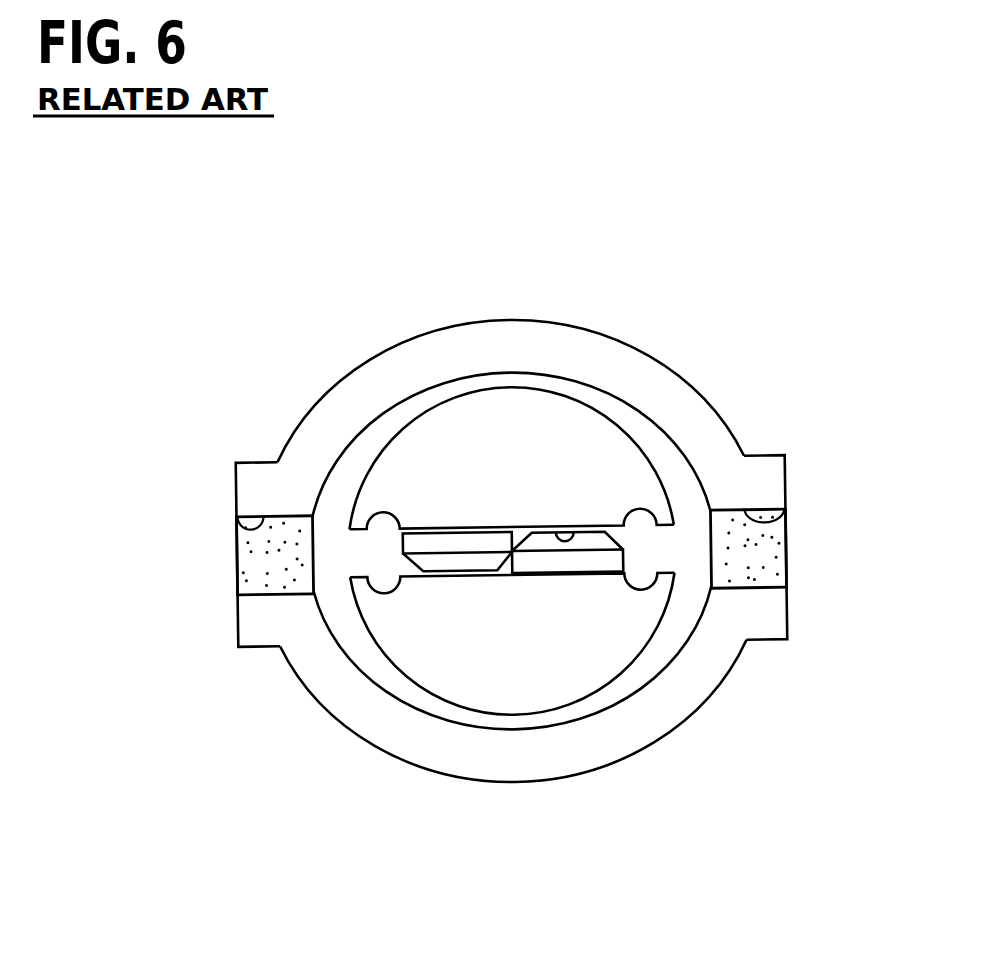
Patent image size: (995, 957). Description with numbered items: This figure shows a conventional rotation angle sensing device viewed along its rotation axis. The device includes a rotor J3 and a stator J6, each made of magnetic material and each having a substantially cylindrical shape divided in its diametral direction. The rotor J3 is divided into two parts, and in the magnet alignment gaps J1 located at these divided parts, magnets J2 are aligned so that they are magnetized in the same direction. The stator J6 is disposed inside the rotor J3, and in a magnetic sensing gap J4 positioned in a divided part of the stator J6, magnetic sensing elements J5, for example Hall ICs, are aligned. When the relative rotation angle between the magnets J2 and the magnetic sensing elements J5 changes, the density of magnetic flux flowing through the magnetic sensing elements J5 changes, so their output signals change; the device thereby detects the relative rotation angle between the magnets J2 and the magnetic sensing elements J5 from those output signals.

The magnet alignment gap J1 is at (238, 529).
The magnet J2 is at (263, 557).
The rotor J3 is at (599, 332).
The magnetic sensing gap J4 is at (582, 532).
The magnetic sensing element J5 is at (467, 560).
The stator J6 is at (500, 387).